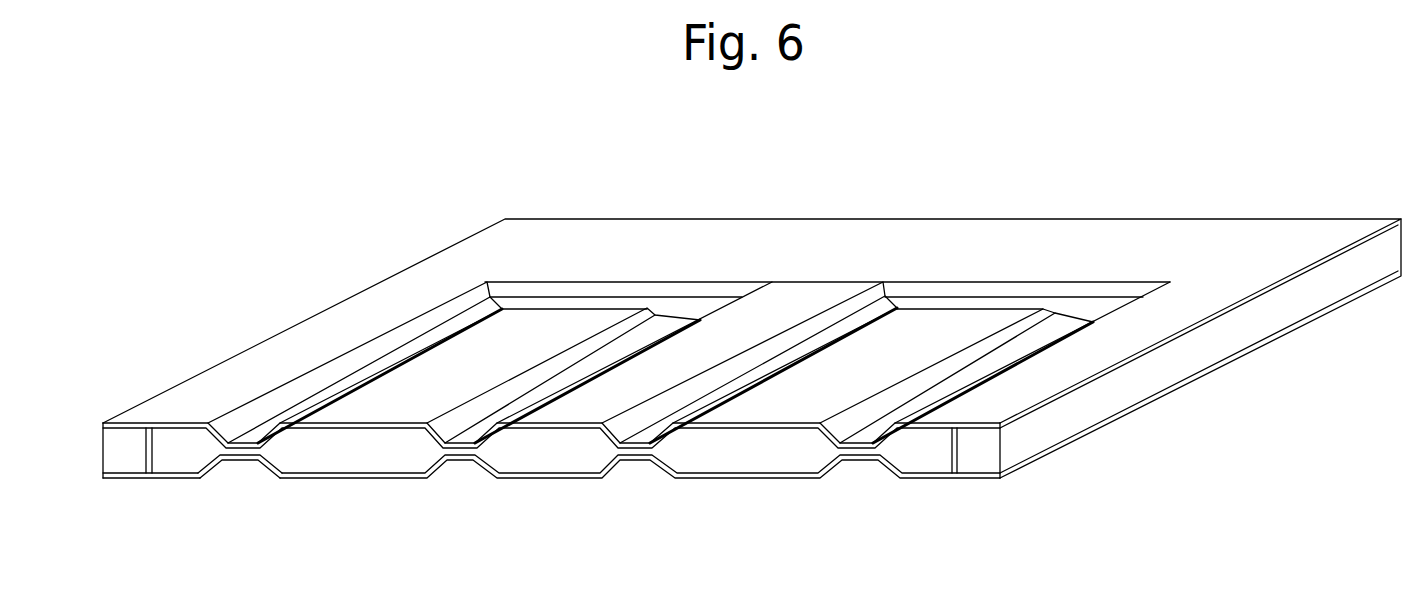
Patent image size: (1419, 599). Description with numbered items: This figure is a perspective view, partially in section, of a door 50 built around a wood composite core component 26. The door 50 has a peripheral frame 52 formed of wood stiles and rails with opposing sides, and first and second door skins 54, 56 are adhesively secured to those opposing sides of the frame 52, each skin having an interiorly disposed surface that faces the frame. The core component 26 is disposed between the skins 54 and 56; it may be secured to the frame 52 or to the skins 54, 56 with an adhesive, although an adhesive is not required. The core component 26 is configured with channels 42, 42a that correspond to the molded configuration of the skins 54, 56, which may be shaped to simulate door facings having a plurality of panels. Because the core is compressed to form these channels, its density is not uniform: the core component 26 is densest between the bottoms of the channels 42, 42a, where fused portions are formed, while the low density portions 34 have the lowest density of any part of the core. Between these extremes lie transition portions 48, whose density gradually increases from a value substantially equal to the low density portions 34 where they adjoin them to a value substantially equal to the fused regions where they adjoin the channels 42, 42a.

The door 50 is at (1099, 186).
The first door skin 54 is at (164, 404).
The channel 42 is at (231, 421).
The channel 42a is at (235, 474).
The peripheral frame 52 is at (128, 457).
The second door skin 56 is at (199, 487).
The core component 26 is at (353, 455).
The low density portion 34 is at (555, 457).
The transition portion 48 is at (820, 457).